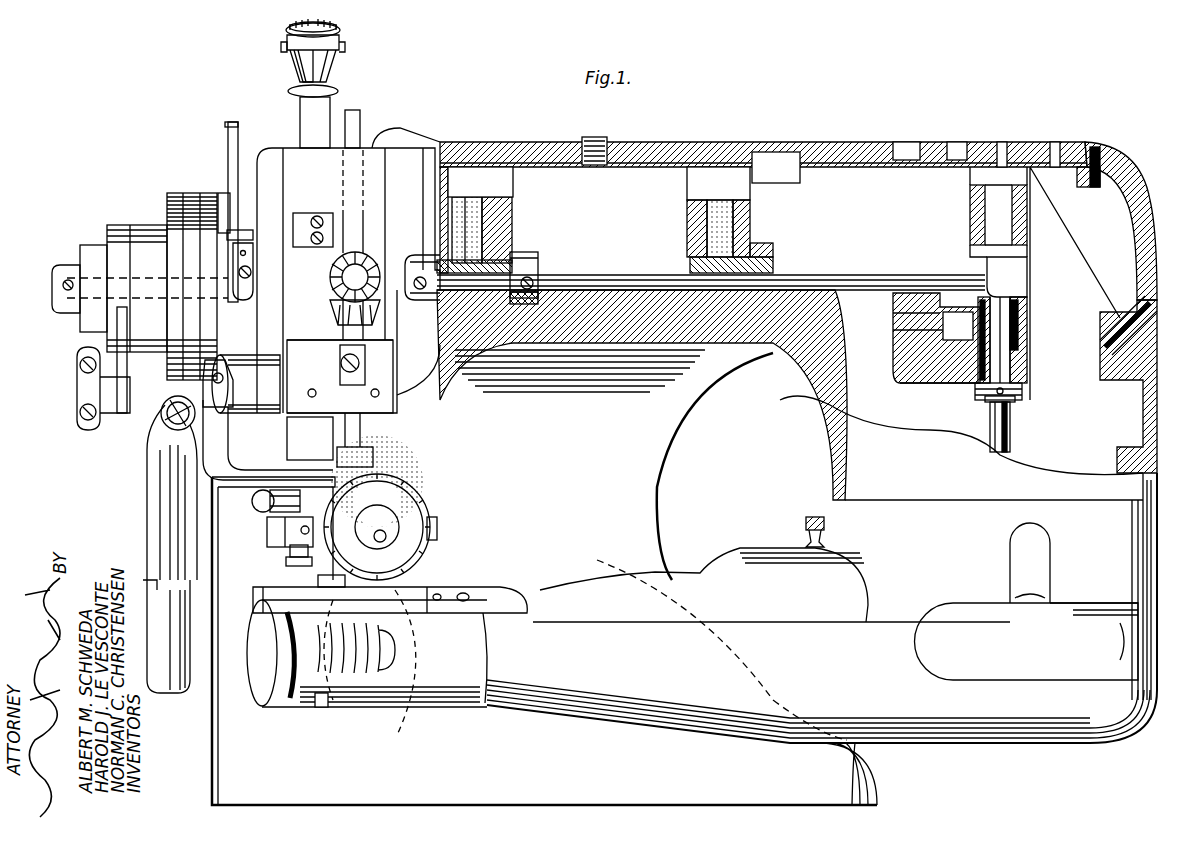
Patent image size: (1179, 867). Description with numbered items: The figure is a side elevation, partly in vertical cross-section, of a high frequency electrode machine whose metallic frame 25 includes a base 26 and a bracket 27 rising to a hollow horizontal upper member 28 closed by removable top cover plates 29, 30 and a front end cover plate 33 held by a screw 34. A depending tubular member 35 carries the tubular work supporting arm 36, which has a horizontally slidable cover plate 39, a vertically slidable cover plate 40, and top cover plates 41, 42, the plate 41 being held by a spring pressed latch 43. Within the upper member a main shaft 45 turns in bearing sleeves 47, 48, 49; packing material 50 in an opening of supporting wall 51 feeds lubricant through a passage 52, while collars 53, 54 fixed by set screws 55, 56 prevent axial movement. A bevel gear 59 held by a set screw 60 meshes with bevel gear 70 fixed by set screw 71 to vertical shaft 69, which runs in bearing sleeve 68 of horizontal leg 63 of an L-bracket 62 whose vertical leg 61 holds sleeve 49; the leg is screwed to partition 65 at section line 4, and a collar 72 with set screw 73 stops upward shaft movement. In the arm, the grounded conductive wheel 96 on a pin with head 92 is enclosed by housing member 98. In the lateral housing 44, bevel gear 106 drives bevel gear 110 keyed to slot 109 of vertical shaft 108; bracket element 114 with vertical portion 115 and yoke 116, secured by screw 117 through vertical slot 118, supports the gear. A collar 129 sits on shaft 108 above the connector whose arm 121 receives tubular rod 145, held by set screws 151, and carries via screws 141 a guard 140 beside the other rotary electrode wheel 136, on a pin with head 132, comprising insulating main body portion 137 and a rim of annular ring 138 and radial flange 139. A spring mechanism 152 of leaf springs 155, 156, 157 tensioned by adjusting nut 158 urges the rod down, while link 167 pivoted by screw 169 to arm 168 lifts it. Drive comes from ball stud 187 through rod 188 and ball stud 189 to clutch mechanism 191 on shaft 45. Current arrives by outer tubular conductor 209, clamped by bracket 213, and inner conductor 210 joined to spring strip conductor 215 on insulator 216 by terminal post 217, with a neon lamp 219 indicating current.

The section line 4- 4 is at (1000, 113).
The frame 25 is at (210, 740).
The base 26 is at (872, 772).
The bracket 27 is at (668, 476).
The upper member 28 is at (762, 165).
The top cover plate 29 is at (513, 143).
The top cover plate 30 is at (818, 143).
The front end cover plate 33 is at (1130, 180).
The screw 34 is at (1126, 305).
The depending tubular member 35 is at (1147, 410).
The work supporting arm 36 is at (1125, 545).
The horizontally slidable cover plate 39 is at (1052, 650).
The vertically slidable cover plate 40 is at (1010, 563).
The top cover plate 41 is at (615, 578).
The cover plate 42 is at (278, 605).
The spring pressed latch 43 is at (800, 537).
The housing 44 is at (400, 135).
The main shaft 45 is at (62, 285).
The bearing sleeve 47 is at (514, 220).
The bearing sleeve 48 is at (775, 265).
The bearing sleeve 49 is at (892, 300).
The packing material 50 is at (457, 203).
The supporting wall 51 is at (514, 203).
The passage 52 is at (462, 205).
The collar 53 is at (403, 257).
The collar 54 is at (540, 258).
The set screw 55 is at (418, 277).
The set screw 56 is at (538, 300).
The bevel gear 59 is at (1007, 277).
The set screw 60 is at (960, 257).
The vertical leg 61 is at (893, 335).
The L-bracket 62 is at (893, 372).
The horizontal leg 63 is at (945, 385).
The partition 65 is at (1020, 267).
The bearing sleeve 68 is at (1027, 345).
The vertical shaft 69 is at (995, 442).
The bevel gear 70 is at (1020, 300).
The set screw 71 is at (1027, 320).
The collar 72 is at (1023, 387).
The set screw 73 is at (1020, 400).
The head 92 is at (386, 550).
The wheel 96 is at (415, 718).
The housing member 98 is at (302, 712).
The bevel gear 106 is at (350, 232).
The vertical shaft 108 is at (362, 118).
The slot 109 is at (378, 432).
The bevel gear 110 is at (345, 350).
The bracket element 114 is at (415, 375).
The vertical portion 115 is at (393, 363).
The yoke 116 is at (335, 325).
The screw 117 is at (343, 396).
The vertical slot 118 is at (342, 366).
The arm 121 is at (268, 532).
The collar 129 is at (378, 452).
The head 132 is at (377, 527).
The wheel 136 is at (327, 582).
The main body portion 137 is at (420, 492).
The annular ring 138 is at (335, 590).
The radial flange 139 is at (424, 512).
The guard 140 is at (437, 530).
The screws 141 is at (290, 565).
The tubular rod 145 is at (300, 108).
The set screws 151 is at (305, 213).
The spring mechanism 152 is at (365, 47).
The leaf spring 155 is at (286, 73).
The leaf spring 156 is at (280, 57).
The leaf spring 157 is at (287, 37).
The adjusting nut 158 is at (342, 33).
The link 167 is at (238, 126).
The arm 168 is at (235, 258).
The screw 169 is at (222, 190).
The ball stud 187 is at (112, 348).
The rod 188 is at (78, 358).
The ball stud 189 is at (80, 378).
The clutch mechanism 191 is at (118, 225).
The outer tubular conductor 209 is at (158, 502).
The inner conductor 210 is at (158, 422).
The bracket 213 is at (150, 562).
The spring strip conductor 215 is at (222, 445).
The insulator 216 is at (247, 355).
The terminal post 217 is at (224, 408).
The neon lamp 219 is at (262, 503).